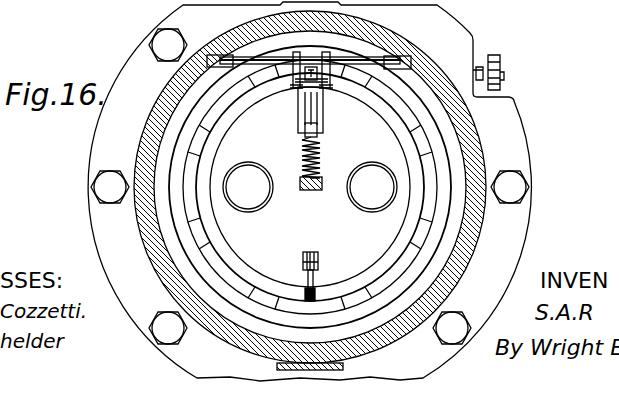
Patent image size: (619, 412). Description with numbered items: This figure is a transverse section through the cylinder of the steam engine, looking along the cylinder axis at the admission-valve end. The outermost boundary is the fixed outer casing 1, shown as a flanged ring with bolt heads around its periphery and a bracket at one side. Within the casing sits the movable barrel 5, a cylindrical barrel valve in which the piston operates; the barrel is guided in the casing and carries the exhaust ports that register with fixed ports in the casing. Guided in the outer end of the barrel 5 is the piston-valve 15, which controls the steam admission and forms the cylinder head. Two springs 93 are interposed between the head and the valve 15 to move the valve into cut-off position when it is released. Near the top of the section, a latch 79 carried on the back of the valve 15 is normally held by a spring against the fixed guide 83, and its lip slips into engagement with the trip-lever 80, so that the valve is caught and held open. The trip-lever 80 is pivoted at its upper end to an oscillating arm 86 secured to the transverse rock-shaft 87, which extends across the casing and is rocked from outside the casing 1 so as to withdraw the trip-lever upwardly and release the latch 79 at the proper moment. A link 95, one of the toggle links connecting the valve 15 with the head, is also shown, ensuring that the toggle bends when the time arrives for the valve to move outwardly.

The fixed outer casing 1 is at (533, 205).
The movable barrel 5 is at (435, 163).
The piston-valve 15 is at (407, 177).
The latch 79 is at (312, 191).
The trip-lever 80 is at (323, 115).
The fixed guide 83 is at (301, 180).
The oscillating arm 86 is at (236, 38).
The transverse rock-shaft 87 is at (368, 58).
The spring 93 is at (276, 160).
The link 95 is at (302, 95).